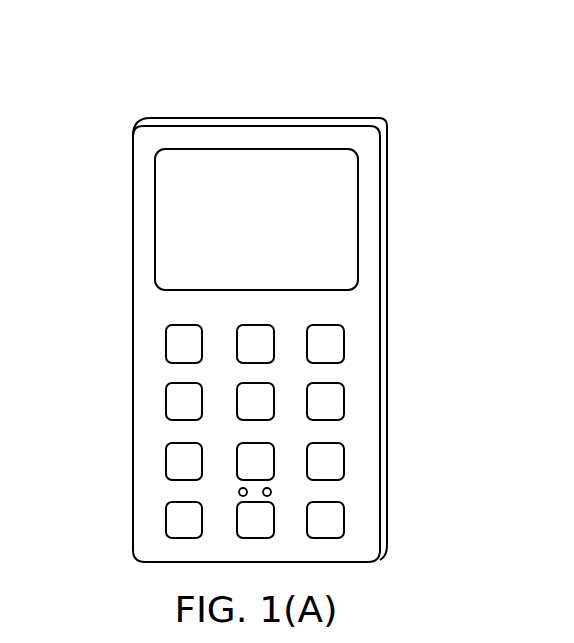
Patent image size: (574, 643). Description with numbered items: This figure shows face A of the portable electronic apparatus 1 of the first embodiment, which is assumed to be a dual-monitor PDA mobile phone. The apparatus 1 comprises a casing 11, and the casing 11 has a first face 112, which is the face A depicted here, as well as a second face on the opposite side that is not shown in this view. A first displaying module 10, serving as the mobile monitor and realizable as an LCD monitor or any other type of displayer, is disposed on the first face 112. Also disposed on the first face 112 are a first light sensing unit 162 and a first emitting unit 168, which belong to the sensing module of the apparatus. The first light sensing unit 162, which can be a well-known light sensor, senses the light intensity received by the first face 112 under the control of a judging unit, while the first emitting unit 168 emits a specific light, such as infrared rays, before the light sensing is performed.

The portable electronic apparatus 1 is at (378, 96).
The first displaying module 10 is at (358, 208).
The casing 11 is at (133, 128).
The first face 112 is at (145, 256).
The first light sensing unit 162 is at (271, 492).
The first emitting unit 168 is at (239, 492).